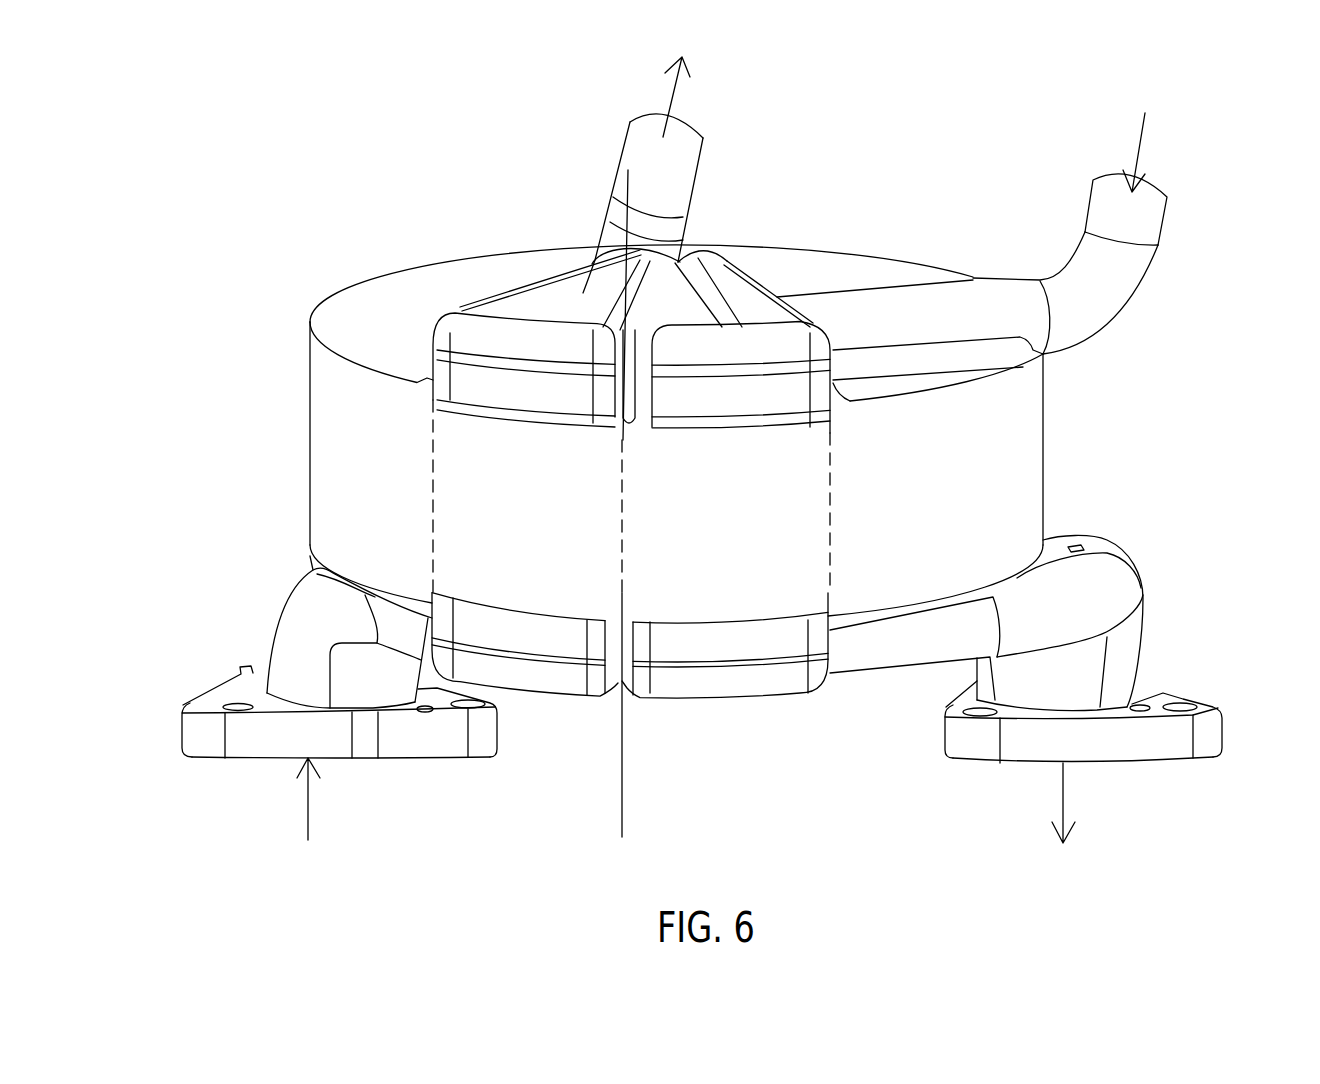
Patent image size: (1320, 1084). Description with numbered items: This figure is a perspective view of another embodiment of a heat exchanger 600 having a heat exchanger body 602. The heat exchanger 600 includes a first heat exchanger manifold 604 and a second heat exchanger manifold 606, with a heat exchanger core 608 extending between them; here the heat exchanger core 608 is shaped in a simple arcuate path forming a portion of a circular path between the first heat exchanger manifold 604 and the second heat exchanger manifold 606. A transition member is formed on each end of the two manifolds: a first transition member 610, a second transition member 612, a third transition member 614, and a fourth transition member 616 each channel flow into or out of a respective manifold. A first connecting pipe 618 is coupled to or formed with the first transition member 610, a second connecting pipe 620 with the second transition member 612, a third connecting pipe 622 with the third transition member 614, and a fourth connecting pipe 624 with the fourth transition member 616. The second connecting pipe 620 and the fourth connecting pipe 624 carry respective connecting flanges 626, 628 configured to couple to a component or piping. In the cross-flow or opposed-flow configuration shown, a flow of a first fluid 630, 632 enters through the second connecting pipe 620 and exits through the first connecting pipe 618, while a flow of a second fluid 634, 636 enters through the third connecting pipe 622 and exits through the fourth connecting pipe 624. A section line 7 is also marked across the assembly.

The heat exchanger 600 is at (452, 128).
The heat exchanger body 602 is at (795, 270).
The first heat exchanger manifold 604 is at (500, 530).
The second heat exchanger manifold 606 is at (705, 535).
The heat exchanger core 608 is at (473, 273).
The first transition member 610 is at (587, 293).
The second transition member 612 is at (545, 678).
The third transition member 614 is at (715, 287).
The fourth transition member 616 is at (763, 683).
The first connecting pipe 618 is at (638, 138).
The second connecting pipe 620 is at (293, 610).
The third connecting pipe 622 is at (987, 303).
The fourth connecting pipe 624 is at (1117, 590).
The connecting flange 626 is at (410, 745).
The connecting flange 628 is at (1100, 745).
The flow of first fluid 630 is at (310, 816).
The flow of first fluid 632 is at (675, 94).
The flow of second fluid 634 is at (1140, 144).
The flow of second fluid 636 is at (1063, 802).
The section line 7- 7 is at (600, 214).